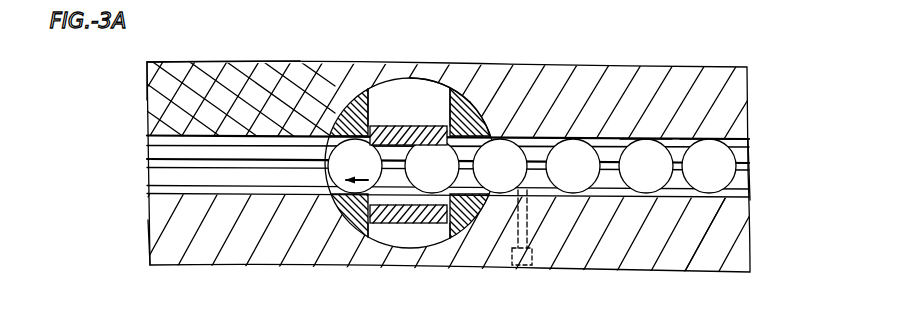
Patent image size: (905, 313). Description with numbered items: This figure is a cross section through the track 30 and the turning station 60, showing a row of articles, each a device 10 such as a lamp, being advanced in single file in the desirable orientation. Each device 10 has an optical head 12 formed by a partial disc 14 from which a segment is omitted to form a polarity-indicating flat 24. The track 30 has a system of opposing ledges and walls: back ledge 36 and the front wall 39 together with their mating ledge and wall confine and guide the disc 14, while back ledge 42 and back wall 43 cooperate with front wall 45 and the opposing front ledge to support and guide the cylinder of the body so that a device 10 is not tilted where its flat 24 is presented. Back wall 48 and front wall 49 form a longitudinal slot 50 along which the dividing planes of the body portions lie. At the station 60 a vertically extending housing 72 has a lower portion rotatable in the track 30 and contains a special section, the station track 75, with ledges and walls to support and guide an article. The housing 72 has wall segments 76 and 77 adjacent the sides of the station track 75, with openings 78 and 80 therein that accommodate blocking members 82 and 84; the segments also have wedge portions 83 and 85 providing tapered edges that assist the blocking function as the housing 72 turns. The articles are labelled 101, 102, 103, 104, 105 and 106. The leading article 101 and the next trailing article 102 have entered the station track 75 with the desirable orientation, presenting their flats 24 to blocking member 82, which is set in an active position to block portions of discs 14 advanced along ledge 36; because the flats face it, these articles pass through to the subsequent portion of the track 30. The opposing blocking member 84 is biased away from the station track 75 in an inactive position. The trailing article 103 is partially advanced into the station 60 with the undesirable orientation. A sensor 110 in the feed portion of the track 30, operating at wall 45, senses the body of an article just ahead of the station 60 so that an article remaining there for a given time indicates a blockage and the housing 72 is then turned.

The device 10 is at (218, 134).
The optical head 12 is at (318, 177).
The partial disc 14 is at (290, 234).
The flat 24 is at (322, 149).
The track 30 is at (624, 60).
The back ledge 36 is at (678, 150).
The front wall 39 is at (152, 238).
The back ledge 42 is at (722, 150).
The back wall 43 is at (150, 81).
The front wall 45 is at (152, 184).
The back wall 48 is at (151, 133).
The front wall 49 is at (150, 152).
The longitudinal slot 50 is at (743, 168).
The turning station 60 is at (380, 58).
The housing 72 is at (464, 88).
The station track 75 is at (319, 136).
The wall segment 76 is at (448, 98).
The wall segment 77 is at (440, 246).
The opening 78 is at (412, 90).
The opening 80 is at (417, 243).
The blocking member 82 is at (390, 125).
The wedge portion 83 is at (491, 116).
The blocking member 84 is at (383, 224).
The wedge portion 85 is at (334, 241).
The leading article 101 is at (355, 166).
The next trailing article 102 is at (432, 166).
The trailing article 103 is at (500, 166).
The article 104 is at (573, 166).
The article 105 is at (646, 166).
The article 106 is at (709, 166).
The sensor 110 is at (512, 270).